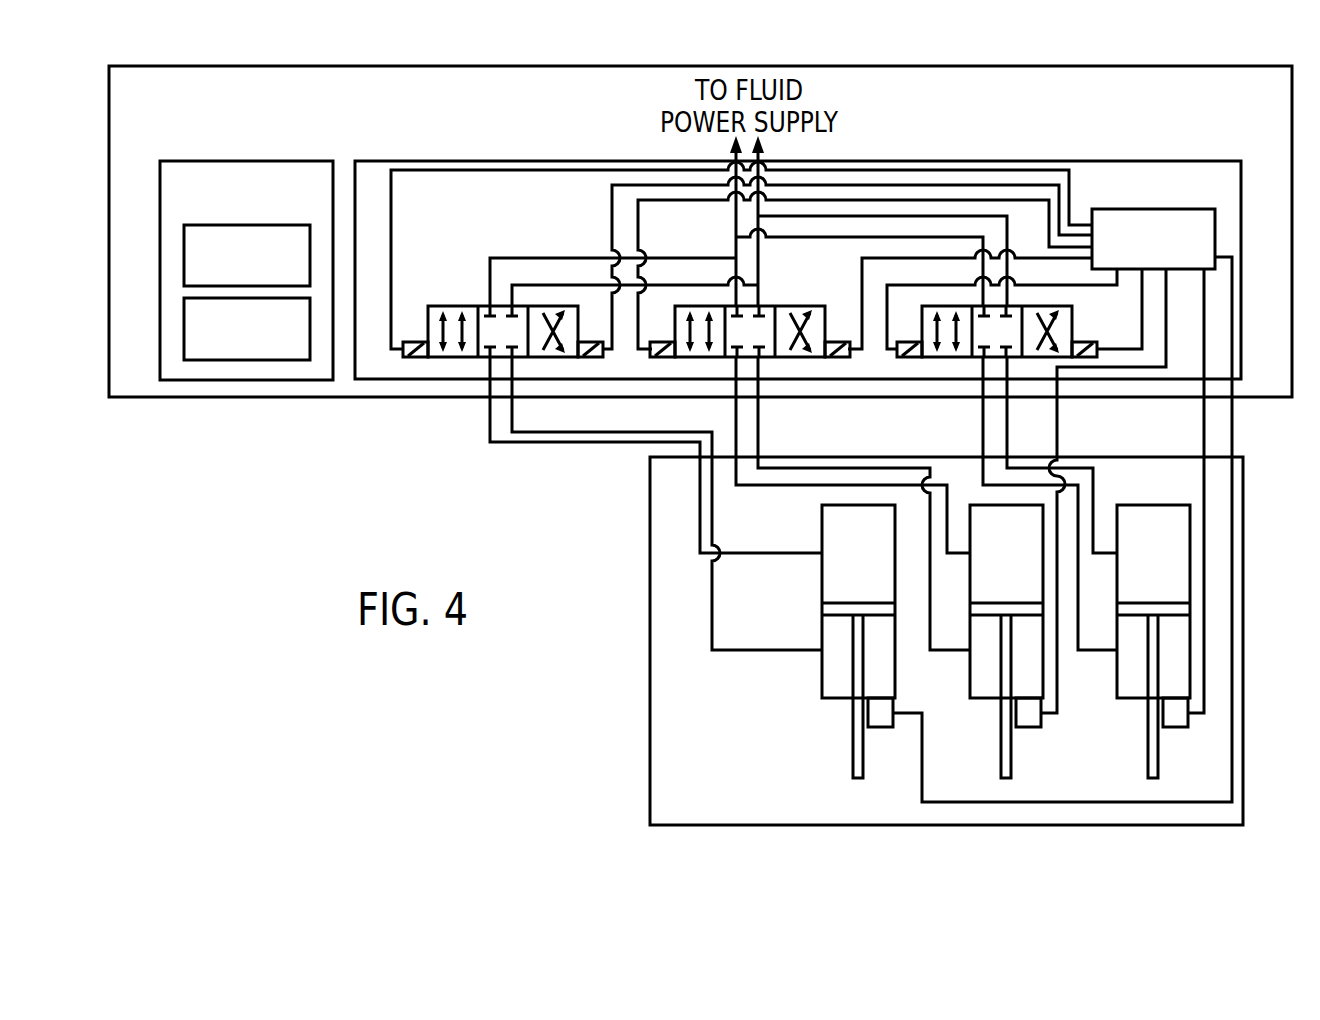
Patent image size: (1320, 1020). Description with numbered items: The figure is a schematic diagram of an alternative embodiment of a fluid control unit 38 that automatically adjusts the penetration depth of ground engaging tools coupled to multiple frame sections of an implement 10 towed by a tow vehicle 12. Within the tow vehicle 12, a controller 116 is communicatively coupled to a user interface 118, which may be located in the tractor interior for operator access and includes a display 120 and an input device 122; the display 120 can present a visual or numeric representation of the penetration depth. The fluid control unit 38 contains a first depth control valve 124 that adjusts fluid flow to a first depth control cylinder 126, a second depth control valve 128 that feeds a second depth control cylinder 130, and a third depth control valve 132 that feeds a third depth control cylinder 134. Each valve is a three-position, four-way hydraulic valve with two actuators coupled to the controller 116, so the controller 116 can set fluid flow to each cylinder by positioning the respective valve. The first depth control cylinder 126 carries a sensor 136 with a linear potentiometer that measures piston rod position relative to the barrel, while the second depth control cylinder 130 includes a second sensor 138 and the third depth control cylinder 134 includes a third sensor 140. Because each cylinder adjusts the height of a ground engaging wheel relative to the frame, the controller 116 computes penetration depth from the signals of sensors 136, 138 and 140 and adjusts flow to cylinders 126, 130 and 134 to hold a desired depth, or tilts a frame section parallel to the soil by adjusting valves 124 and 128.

The implement 10 is at (650, 640).
The tow vehicle 12 is at (703, 66).
The fluid control unit 38 is at (1162, 161).
The controller 116 is at (1155, 209).
The user interface 118 is at (248, 161).
The display 120 is at (184, 255).
The input device 122 is at (184, 333).
The first depth control valve 124 is at (453, 302).
The first depth control cylinder 126 is at (829, 712).
The second depth control valve 128 is at (778, 299).
The second depth control cylinder 130 is at (974, 712).
The third depth control valve 132 is at (930, 368).
The third depth control cylinder 134 is at (1124, 712).
The sensor 136 is at (878, 728).
The second sensor 138 is at (1028, 728).
The third sensor 140 is at (1176, 728).